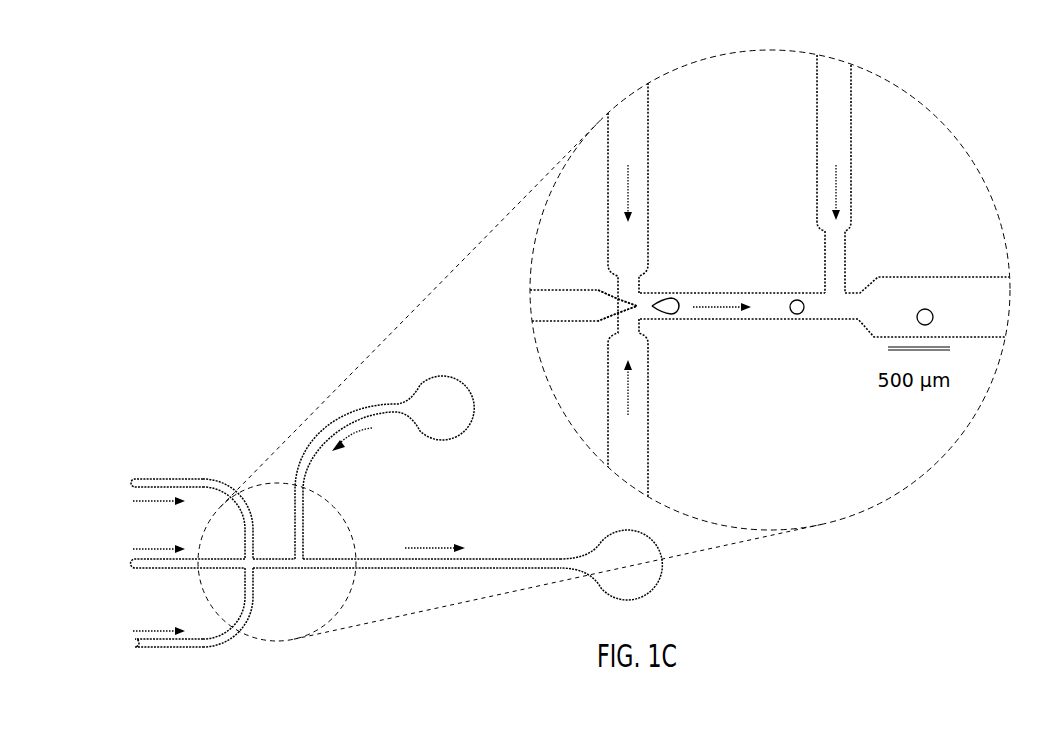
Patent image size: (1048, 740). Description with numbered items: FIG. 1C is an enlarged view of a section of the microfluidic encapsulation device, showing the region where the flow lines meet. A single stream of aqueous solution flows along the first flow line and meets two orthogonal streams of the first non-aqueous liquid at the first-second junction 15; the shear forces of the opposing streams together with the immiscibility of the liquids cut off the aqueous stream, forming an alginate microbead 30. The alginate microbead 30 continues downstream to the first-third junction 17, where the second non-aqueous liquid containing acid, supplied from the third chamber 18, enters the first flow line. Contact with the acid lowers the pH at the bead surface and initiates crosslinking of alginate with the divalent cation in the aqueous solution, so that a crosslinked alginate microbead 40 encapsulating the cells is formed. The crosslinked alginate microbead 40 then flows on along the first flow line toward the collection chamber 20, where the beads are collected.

The first-second junction 15 is at (630, 293).
The first-third junction 17 is at (835, 295).
The third chamber 18 is at (431, 420).
The collection chamber 20 is at (616, 579).
The alginate microbead 30 is at (797, 314).
The crosslinked alginate microbead 40 is at (925, 309).